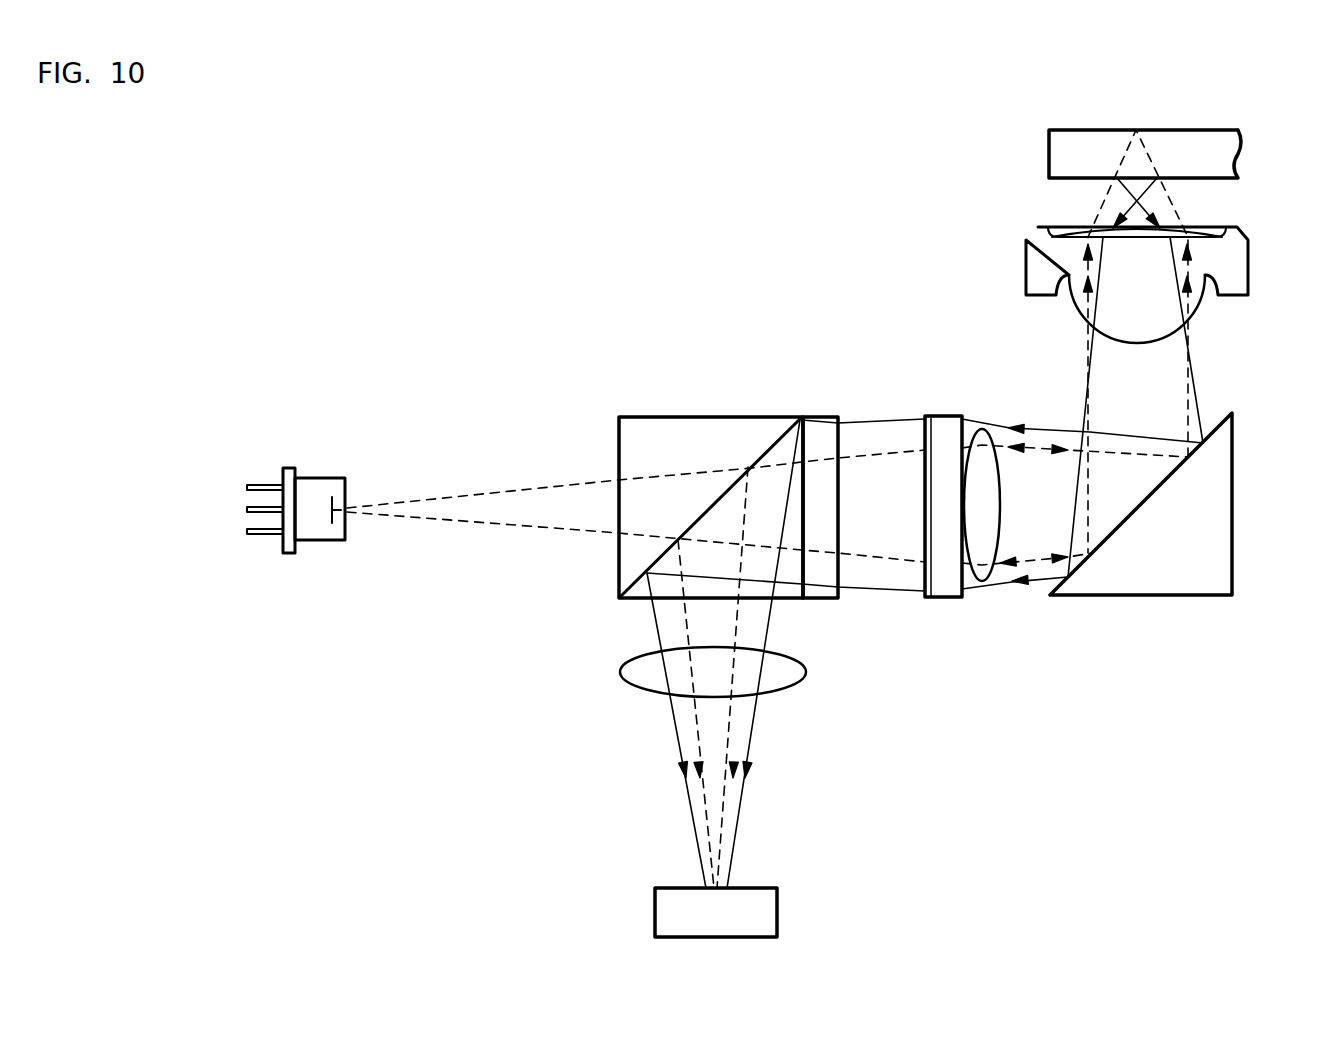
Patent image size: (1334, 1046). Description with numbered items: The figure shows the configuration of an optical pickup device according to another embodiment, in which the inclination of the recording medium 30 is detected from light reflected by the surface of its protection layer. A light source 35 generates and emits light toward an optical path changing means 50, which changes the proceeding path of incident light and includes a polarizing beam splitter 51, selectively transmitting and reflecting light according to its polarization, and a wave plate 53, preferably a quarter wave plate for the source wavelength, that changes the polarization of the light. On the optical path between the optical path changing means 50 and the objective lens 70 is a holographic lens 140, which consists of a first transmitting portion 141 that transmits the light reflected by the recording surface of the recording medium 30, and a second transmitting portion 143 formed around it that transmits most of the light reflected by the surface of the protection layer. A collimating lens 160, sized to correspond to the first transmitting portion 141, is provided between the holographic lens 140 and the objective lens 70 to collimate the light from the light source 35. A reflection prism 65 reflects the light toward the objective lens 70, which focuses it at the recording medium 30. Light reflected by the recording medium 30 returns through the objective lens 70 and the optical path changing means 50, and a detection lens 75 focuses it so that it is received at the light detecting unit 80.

The recording medium 30 is at (1228, 152).
The objective lens 70 is at (1250, 262).
The reflection prism 65 is at (1234, 475).
The collimating lens 160 is at (983, 428).
The holographic lens 140 is at (905, 453).
The second transmitting portion 143 is at (925, 434).
The first transmitting portion 141 is at (925, 492).
The optical path changing means 50 is at (732, 447).
The polarizing beam splitter 51 is at (636, 416).
The wave plate 53 is at (826, 416).
The light source 35 is at (290, 556).
The detection lens 75 is at (808, 670).
The light detecting unit 80 is at (632, 890).